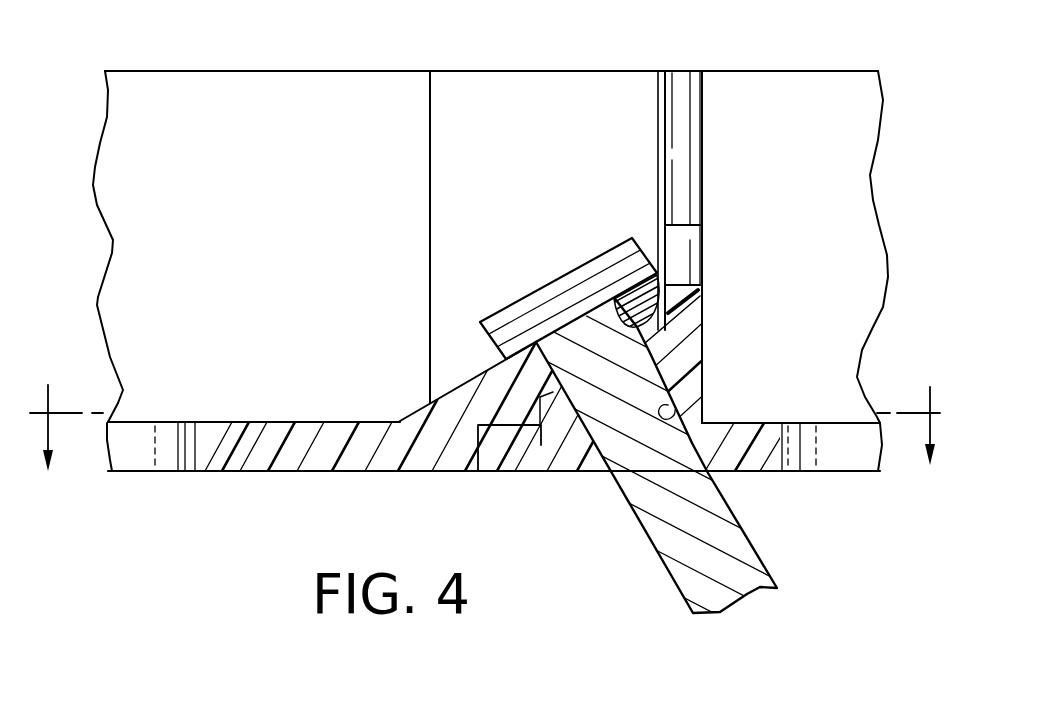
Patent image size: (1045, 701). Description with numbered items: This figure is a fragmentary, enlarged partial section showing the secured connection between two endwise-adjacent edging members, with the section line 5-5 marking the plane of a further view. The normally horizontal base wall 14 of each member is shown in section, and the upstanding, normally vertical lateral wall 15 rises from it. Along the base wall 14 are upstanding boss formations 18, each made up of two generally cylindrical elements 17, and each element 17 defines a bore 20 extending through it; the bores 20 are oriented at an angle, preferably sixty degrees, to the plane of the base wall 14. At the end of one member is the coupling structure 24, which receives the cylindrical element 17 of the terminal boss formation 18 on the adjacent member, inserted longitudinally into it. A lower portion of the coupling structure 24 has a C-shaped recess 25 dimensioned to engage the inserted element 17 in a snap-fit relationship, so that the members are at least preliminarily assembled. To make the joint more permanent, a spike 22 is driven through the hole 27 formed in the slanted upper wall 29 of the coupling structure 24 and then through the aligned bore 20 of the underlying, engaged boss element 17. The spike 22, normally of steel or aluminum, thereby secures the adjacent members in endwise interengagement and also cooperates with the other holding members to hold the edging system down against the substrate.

The section line 5- 5 is at (488, 452).
The base wall 14 is at (250, 458).
The lateral wall 15 is at (226, 95).
The generally cylindrical element 17 is at (560, 448).
The boss formation 18 is at (708, 342).
The bore 20 is at (673, 415).
The spike 22 is at (670, 567).
The coupling structure 24 is at (453, 376).
The C-shaped recess 25 is at (548, 435).
The hole 27 is at (640, 329).
The slanted upper wall 29 is at (534, 345).